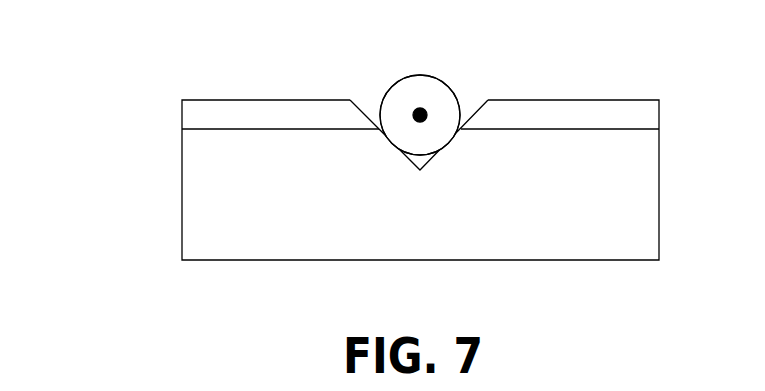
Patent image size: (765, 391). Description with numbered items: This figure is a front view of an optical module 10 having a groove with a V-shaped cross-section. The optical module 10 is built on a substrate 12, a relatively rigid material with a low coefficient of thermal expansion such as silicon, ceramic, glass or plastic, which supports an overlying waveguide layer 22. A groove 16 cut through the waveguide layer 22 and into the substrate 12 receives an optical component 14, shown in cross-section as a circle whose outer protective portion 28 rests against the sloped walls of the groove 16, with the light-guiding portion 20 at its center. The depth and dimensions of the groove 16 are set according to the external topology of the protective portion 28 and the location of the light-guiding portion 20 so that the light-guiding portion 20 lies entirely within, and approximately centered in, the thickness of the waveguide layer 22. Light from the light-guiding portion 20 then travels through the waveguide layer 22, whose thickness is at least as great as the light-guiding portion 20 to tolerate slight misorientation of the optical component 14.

The optical module 10 is at (141, 180).
The substrate 12 is at (255, 261).
The optical component 14 is at (418, 75).
The groove 16 is at (470, 96).
The light-guiding portion 20 is at (420, 110).
The waveguide layer 22 is at (267, 100).
The protective portion 28 is at (428, 98).